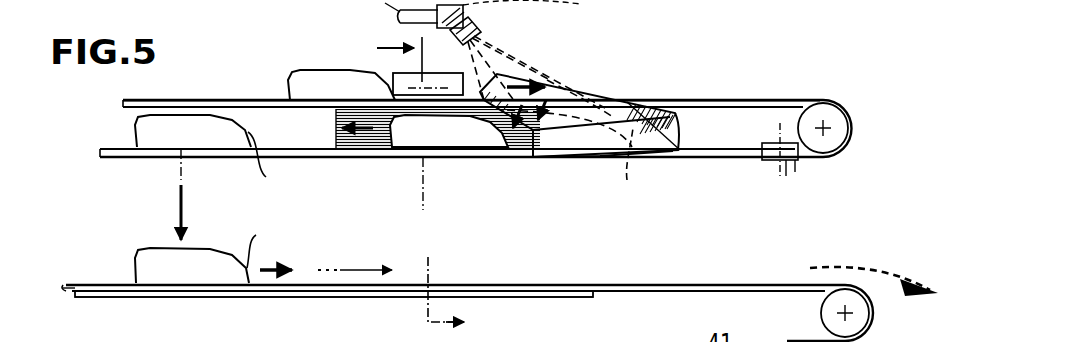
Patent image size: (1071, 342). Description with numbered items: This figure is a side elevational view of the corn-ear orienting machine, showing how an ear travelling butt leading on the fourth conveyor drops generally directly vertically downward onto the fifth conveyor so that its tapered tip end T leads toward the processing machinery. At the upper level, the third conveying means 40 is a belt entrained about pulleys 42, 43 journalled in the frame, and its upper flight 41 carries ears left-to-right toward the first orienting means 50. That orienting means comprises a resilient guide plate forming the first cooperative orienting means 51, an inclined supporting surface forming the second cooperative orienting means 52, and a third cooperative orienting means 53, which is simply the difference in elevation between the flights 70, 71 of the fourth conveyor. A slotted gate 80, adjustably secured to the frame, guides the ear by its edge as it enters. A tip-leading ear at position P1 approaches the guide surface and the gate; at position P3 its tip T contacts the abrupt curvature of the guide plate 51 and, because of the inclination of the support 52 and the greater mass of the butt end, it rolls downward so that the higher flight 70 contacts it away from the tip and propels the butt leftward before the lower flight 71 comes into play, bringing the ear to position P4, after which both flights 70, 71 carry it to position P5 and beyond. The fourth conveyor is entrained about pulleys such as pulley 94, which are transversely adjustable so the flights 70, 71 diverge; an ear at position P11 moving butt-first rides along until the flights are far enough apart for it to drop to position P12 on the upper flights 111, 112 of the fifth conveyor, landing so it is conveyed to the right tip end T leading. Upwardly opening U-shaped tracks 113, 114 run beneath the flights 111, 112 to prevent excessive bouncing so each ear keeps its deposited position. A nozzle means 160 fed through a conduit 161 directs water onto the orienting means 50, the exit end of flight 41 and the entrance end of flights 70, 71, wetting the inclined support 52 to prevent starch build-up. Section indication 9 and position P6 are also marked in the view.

The third conveying means 40 is at (232, 98).
The upper flight 41 is at (745, 100).
The pulley 42 is at (467, 313).
The pulley 43 is at (825, 110).
The first orienting means 50 is at (704, 81).
The first cooperative orienting means 51 is at (617, 103).
The second cooperative orienting means 52 is at (355, 155).
The third cooperative orienting means 53 is at (660, 163).
The flight 70 is at (415, 175).
The flight 71 is at (115, 158).
The gate 80 is at (436, 82).
The pulley 94 is at (794, 162).
The upper flight 111 is at (63, 256).
The upper flight 112 is at (66, 285).
The track 113 is at (334, 316).
The track 114 is at (203, 295).
The nozzle means 160 is at (477, 30).
The conduit 161 is at (348, 7).
The section line FIG. 9 is at (421, 181).
The position P1 is at (310, 70).
The position P3 is at (652, 102).
The position P4 is at (628, 7).
The position P5 is at (457, 144).
The parcel P6 is at (541, 335).
The position P11 is at (147, 133).
The position P12 is at (157, 262).
The tip end T is at (442, 198).